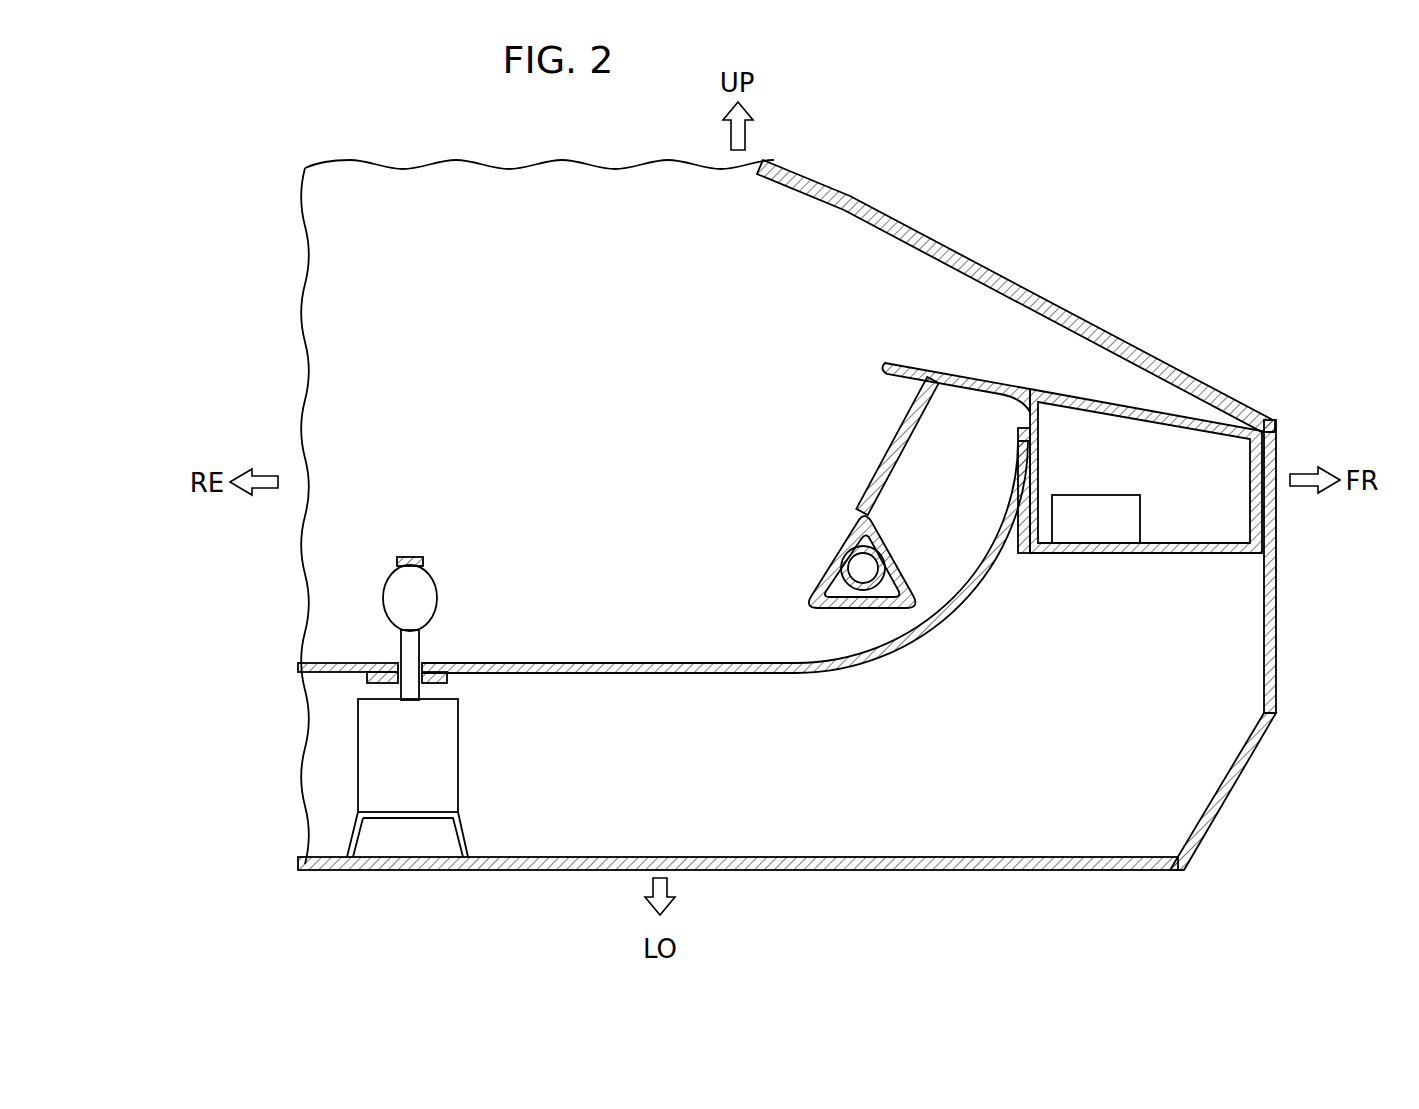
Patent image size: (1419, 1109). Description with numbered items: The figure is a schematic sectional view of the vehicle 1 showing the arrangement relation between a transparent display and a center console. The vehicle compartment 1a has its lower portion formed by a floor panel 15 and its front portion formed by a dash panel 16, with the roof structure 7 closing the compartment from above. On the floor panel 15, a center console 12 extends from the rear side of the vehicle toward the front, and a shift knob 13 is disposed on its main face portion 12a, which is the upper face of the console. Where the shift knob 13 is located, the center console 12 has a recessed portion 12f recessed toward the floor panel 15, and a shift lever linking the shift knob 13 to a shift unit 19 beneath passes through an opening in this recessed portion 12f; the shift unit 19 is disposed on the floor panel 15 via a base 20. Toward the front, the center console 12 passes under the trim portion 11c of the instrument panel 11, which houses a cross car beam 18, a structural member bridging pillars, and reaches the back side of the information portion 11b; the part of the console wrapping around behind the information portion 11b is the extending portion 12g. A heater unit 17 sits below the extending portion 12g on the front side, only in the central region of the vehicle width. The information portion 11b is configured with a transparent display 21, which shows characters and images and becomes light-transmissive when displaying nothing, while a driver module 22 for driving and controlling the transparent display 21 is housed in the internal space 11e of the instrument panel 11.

The vehicle 1 is at (992, 202).
The vehicle compartment 1a is at (763, 230).
The roof panel 7 is at (886, 224).
The instrument panel 11 is at (1102, 394).
The information portion 11b is at (984, 385).
The trim portion 11c is at (813, 562).
The internal space 11e is at (1153, 438).
The center console 12 is at (663, 702).
The main face portion 12a is at (566, 665).
The recessed portion 12f is at (384, 652).
The extending portion 12g is at (990, 486).
The shift knob 13 is at (395, 584).
The floor panel 15 is at (845, 870).
The dash panel 16 is at (1277, 620).
The heater unit 17 is at (1130, 777).
The cross car beam 18 is at (887, 585).
The shift unit 19 is at (377, 742).
The base 20 is at (353, 828).
The transparent display 21 is at (893, 447).
The driver module 22 is at (1127, 518).